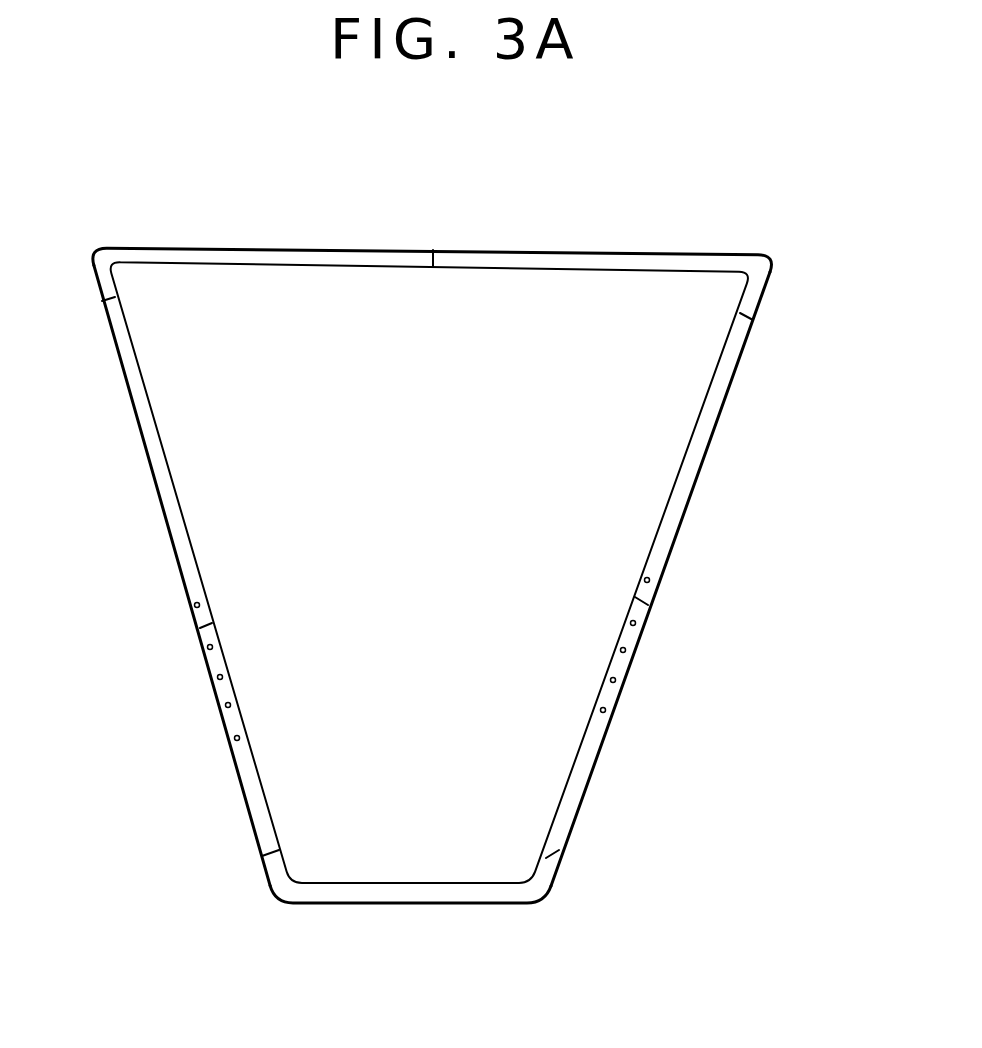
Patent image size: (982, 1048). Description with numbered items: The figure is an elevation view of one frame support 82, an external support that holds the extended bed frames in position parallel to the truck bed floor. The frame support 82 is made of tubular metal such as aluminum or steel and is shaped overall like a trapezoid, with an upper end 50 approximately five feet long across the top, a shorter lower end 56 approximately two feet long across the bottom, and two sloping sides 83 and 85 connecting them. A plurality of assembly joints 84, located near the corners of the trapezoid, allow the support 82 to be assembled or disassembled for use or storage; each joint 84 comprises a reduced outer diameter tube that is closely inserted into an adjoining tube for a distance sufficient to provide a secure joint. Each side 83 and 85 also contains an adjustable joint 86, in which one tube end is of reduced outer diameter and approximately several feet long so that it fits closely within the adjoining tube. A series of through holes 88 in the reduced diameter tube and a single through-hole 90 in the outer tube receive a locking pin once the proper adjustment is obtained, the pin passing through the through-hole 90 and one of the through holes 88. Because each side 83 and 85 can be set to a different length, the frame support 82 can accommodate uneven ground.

The upper end 50 is at (335, 243).
The lower end 56 is at (319, 827).
The frame support 82 is at (594, 197).
The side 83 is at (172, 483).
The assembly joint 84 is at (437, 262).
The side 85 is at (710, 442).
The adjustable joint 86 is at (212, 624).
The through holes 88 is at (214, 647).
The through-hole 90 is at (195, 605).